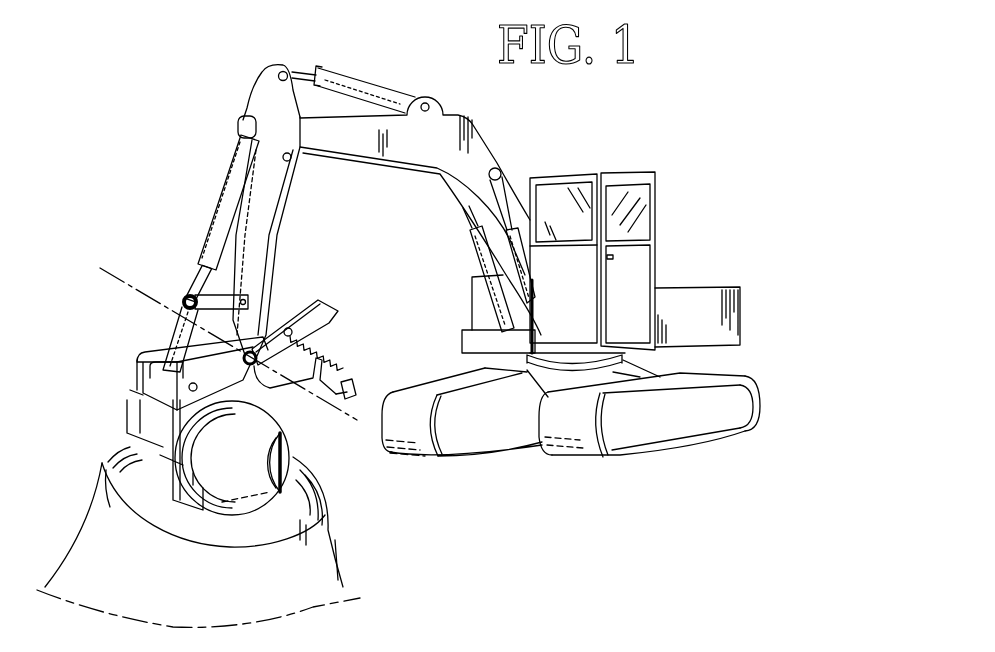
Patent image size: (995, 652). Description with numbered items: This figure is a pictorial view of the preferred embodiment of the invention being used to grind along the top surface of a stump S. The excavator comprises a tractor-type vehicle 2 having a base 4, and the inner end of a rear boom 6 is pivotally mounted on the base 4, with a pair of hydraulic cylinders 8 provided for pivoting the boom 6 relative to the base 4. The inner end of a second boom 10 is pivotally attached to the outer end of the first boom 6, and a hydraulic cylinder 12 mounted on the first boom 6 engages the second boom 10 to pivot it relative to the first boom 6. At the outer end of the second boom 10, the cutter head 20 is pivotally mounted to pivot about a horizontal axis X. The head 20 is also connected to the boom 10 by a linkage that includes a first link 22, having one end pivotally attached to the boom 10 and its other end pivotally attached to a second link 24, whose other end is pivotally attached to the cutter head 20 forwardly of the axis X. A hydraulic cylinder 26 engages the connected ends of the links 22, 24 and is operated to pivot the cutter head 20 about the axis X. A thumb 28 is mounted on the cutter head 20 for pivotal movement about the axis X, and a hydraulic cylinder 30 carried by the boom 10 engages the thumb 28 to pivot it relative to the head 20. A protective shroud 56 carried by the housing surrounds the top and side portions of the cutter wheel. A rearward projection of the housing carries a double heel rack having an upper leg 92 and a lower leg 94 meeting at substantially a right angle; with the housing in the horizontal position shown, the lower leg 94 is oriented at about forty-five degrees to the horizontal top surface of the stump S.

The tractor-type vehicle 2 is at (748, 217).
The base 4 is at (462, 342).
The rear boom 6 is at (367, 148).
The hydraulic cylinders 8 is at (470, 248).
The second boom 10 is at (270, 193).
The hydraulic cylinder 12 is at (390, 88).
The cutter head 20 is at (100, 442).
The first link 22 is at (238, 290).
The second link 24 is at (178, 328).
The hydraulic cylinder 26 is at (227, 173).
The thumb 28 is at (322, 295).
The hydraulic cylinder 30 is at (270, 308).
The protective shroud 56 is at (292, 444).
The upper leg 92 is at (350, 385).
The lower leg 94 is at (355, 395).
The stump S is at (332, 578).
The horizontal axis X is at (228, 322).